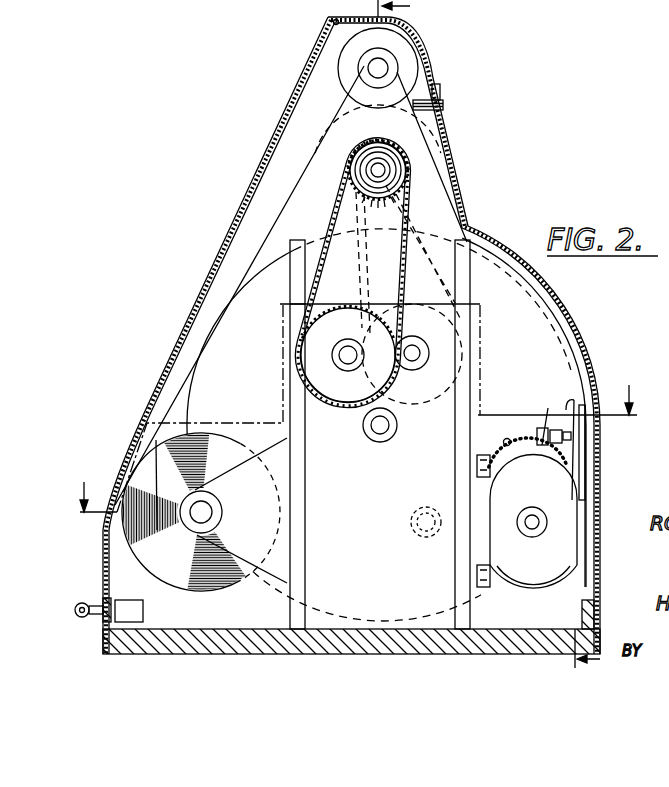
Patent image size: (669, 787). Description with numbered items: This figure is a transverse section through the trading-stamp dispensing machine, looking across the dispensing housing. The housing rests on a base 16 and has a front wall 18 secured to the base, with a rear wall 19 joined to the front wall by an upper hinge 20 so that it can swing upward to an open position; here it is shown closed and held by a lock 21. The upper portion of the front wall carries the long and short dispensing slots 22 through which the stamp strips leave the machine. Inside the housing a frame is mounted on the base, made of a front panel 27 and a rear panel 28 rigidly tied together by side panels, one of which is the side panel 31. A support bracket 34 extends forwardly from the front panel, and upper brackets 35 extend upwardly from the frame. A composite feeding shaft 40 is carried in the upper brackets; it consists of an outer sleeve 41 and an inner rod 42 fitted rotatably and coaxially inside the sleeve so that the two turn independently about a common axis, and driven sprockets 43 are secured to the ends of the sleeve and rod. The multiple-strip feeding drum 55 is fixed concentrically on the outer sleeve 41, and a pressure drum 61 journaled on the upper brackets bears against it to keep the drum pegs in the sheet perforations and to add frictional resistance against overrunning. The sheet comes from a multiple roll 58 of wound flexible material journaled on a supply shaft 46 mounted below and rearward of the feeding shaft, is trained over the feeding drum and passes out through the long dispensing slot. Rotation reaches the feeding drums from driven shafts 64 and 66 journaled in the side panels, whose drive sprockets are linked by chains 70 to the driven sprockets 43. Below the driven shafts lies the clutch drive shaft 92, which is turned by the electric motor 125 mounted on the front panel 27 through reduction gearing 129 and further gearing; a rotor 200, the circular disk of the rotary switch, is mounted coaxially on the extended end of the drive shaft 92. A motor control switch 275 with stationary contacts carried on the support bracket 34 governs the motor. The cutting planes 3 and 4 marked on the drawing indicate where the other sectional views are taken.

The base 16 is at (370, 653).
The front wall 18 is at (573, 330).
The rear wall 19 is at (207, 275).
The upper hinge 20 is at (333, 23).
The lock 21 is at (100, 618).
The dispensing slots 22 is at (443, 108).
The front panel 27 is at (463, 545).
The rear panel 28 is at (300, 540).
The side panel 31 is at (352, 522).
The support bracket 34 is at (493, 458).
The upper brackets 35 is at (343, 163).
The composite feeding shaft 40 is at (400, 185).
The outer sleeve 41 is at (395, 158).
The inner rod 42 is at (390, 171).
The driven sprockets 43 is at (370, 192).
The supply shaft 46 is at (203, 512).
The feeding drum 55 is at (345, 153).
The multiple roll 58 is at (233, 587).
The pressure drum 61 is at (400, 48).
The driven shaft 64 is at (412, 352).
The driven shaft 66 is at (350, 357).
The chains 70 is at (297, 288).
The drive shaft 92 is at (376, 440).
The electric motor 125 is at (533, 560).
The reduction gearing 129 is at (526, 412).
The rotor 200 is at (193, 377).
The motor control switch 275 is at (570, 400).
The section line 3- 3 is at (364, 425).
The section line 4- 4 is at (489, 340).